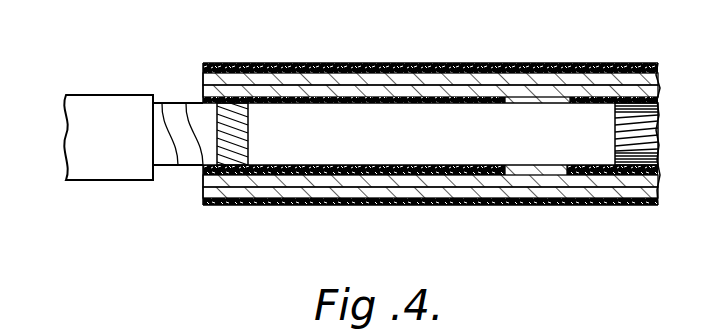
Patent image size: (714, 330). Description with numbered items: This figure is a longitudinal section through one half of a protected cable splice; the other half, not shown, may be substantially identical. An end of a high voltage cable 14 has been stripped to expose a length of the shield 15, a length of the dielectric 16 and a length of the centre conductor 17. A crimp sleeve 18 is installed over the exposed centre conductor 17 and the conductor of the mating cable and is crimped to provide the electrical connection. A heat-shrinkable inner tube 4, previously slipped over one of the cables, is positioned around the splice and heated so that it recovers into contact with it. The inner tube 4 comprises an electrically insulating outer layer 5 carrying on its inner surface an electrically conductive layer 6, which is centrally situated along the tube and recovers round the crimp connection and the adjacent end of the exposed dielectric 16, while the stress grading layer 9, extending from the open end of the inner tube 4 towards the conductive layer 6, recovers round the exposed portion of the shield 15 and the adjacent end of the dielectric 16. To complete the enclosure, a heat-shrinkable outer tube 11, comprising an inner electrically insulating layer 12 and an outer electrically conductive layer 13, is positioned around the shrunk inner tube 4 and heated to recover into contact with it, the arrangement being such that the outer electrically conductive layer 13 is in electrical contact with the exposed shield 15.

The inner tube 4 is at (195, 183).
The electrically insulating outer layer 5 is at (523, 92).
The electrically conductive layer 6 is at (593, 68).
The stress grading layer 9 is at (298, 190).
The outer tube 11 is at (410, 134).
The inner electrically insulating layer 12 is at (548, 188).
The outer electrically conductive layer 13 is at (490, 193).
The high voltage cable 14 is at (72, 90).
The shield 15 is at (232, 106).
The dielectric 16 is at (390, 113).
The centre conductor 17 is at (642, 133).
The crimp sleeve 18 is at (656, 155).